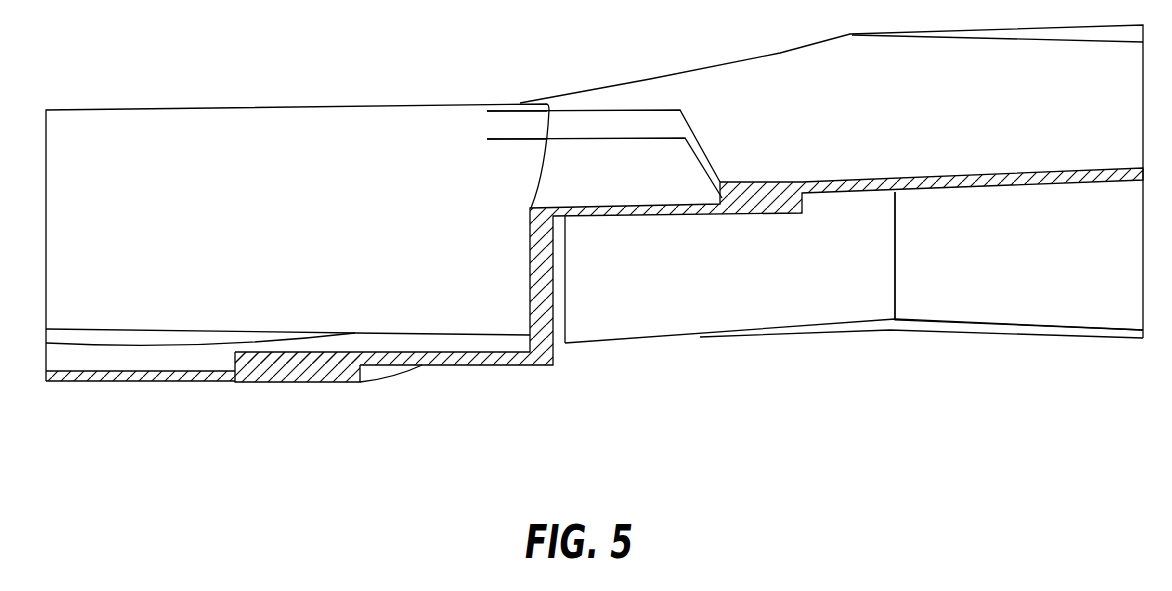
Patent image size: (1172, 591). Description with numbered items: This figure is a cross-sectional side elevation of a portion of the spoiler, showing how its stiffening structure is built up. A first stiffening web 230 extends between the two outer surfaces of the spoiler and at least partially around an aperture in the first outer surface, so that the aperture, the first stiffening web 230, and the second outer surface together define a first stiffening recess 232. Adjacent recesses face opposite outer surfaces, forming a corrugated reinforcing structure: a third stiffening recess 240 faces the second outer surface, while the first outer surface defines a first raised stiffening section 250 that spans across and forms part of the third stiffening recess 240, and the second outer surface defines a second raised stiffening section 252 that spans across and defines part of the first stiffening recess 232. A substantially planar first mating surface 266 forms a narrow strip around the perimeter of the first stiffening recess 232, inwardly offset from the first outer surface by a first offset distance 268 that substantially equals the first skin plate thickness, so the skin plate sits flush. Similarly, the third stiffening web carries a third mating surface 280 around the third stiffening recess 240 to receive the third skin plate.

The first stiffening web 230 is at (480, 367).
The first stiffening recess 232 is at (223, 136).
The third stiffening recess 240 is at (968, 291).
The first raised stiffening section 250 is at (805, 90).
The second raised stiffening section 252 is at (143, 384).
The first mating surface 266 is at (630, 187).
The first offset distance 268 is at (513, 172).
The third mating surface 280 is at (422, 366).